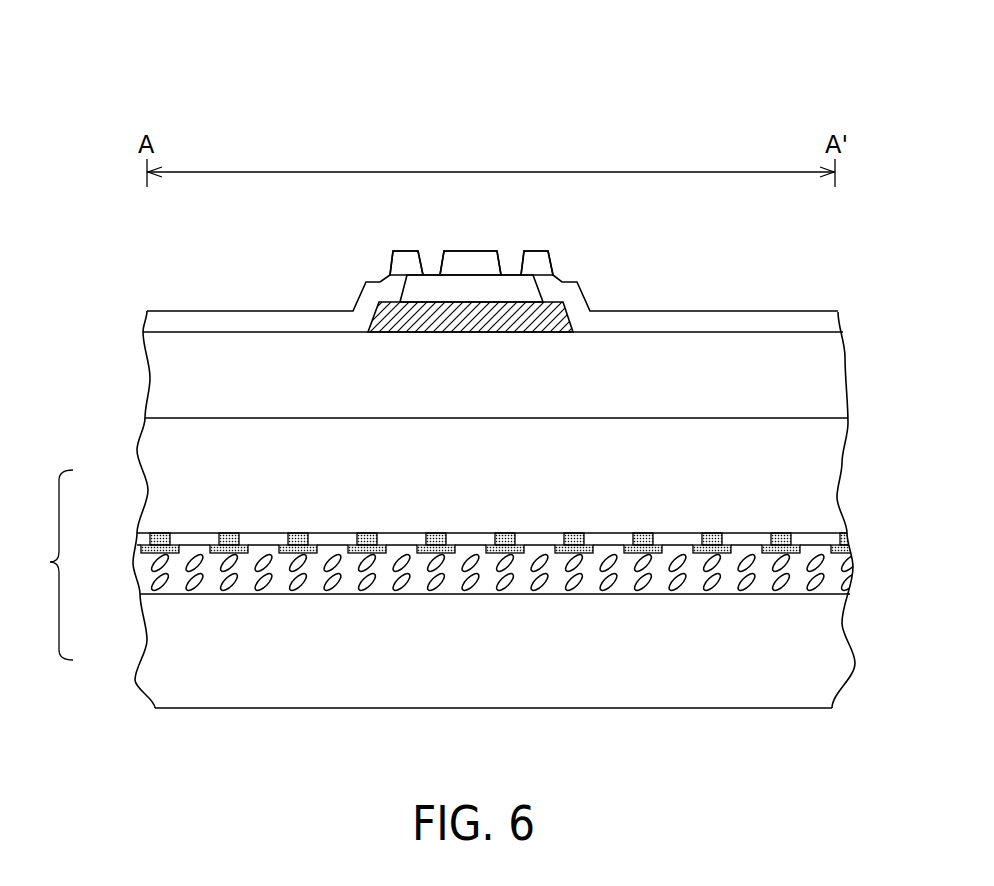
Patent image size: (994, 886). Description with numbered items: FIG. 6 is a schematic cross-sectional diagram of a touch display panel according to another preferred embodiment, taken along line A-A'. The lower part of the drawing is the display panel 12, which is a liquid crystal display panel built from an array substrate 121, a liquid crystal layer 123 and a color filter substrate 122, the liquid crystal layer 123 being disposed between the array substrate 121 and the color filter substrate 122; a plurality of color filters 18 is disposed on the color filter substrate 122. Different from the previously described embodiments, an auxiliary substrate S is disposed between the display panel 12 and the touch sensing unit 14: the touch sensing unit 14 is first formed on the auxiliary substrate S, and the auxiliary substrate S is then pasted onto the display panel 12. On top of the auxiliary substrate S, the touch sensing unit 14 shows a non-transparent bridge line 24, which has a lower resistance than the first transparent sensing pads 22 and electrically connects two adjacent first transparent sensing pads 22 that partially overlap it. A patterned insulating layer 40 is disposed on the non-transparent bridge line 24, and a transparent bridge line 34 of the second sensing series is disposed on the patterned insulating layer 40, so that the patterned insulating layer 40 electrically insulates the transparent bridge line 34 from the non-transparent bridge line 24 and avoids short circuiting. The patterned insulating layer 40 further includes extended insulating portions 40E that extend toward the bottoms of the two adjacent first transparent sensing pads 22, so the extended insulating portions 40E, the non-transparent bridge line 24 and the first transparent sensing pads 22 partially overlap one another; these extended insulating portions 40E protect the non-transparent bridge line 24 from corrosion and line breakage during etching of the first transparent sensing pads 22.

The touch sensing unit 14 is at (684, 103).
The first transparent sensing pad 22 is at (218, 320).
The non-transparent bridge line 24 is at (515, 323).
The transparent bridge line 34 is at (463, 260).
The patterned insulating layer 40 is at (487, 287).
The extended insulating portion 40E is at (417, 293).
The auxiliary substrate S is at (170, 378).
The display panel 12 is at (50, 562).
The array substrate 121 is at (148, 643).
The color filter substrate 122 is at (155, 486).
The liquid crystal layer 123 is at (147, 573).
The color filter 18 is at (264, 535).